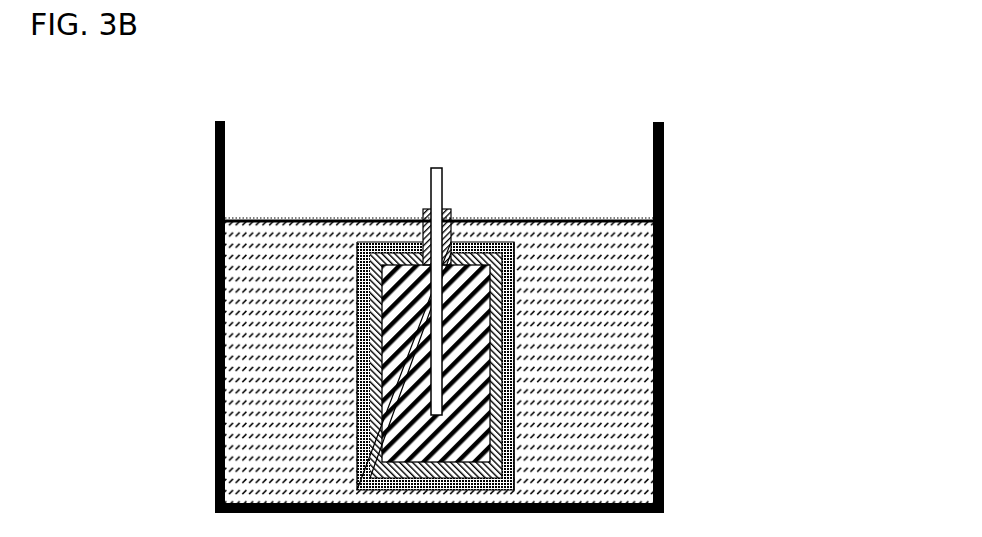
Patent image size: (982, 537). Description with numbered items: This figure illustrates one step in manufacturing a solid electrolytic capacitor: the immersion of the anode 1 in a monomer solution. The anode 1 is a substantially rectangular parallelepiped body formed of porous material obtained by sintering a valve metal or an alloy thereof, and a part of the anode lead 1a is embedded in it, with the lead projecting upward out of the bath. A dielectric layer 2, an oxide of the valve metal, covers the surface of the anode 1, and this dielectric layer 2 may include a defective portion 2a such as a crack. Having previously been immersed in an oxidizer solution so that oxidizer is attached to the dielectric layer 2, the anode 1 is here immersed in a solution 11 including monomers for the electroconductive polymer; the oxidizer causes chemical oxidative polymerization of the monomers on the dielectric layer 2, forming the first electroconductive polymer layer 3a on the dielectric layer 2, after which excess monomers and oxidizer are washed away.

The anode 1 is at (370, 245).
The anode lead 1a is at (432, 180).
The dielectric layer 2 is at (515, 247).
The defective portion 2a is at (527, 295).
The first electroconductive polymer layer 3a is at (357, 337).
The molten bath 11 is at (603, 372).